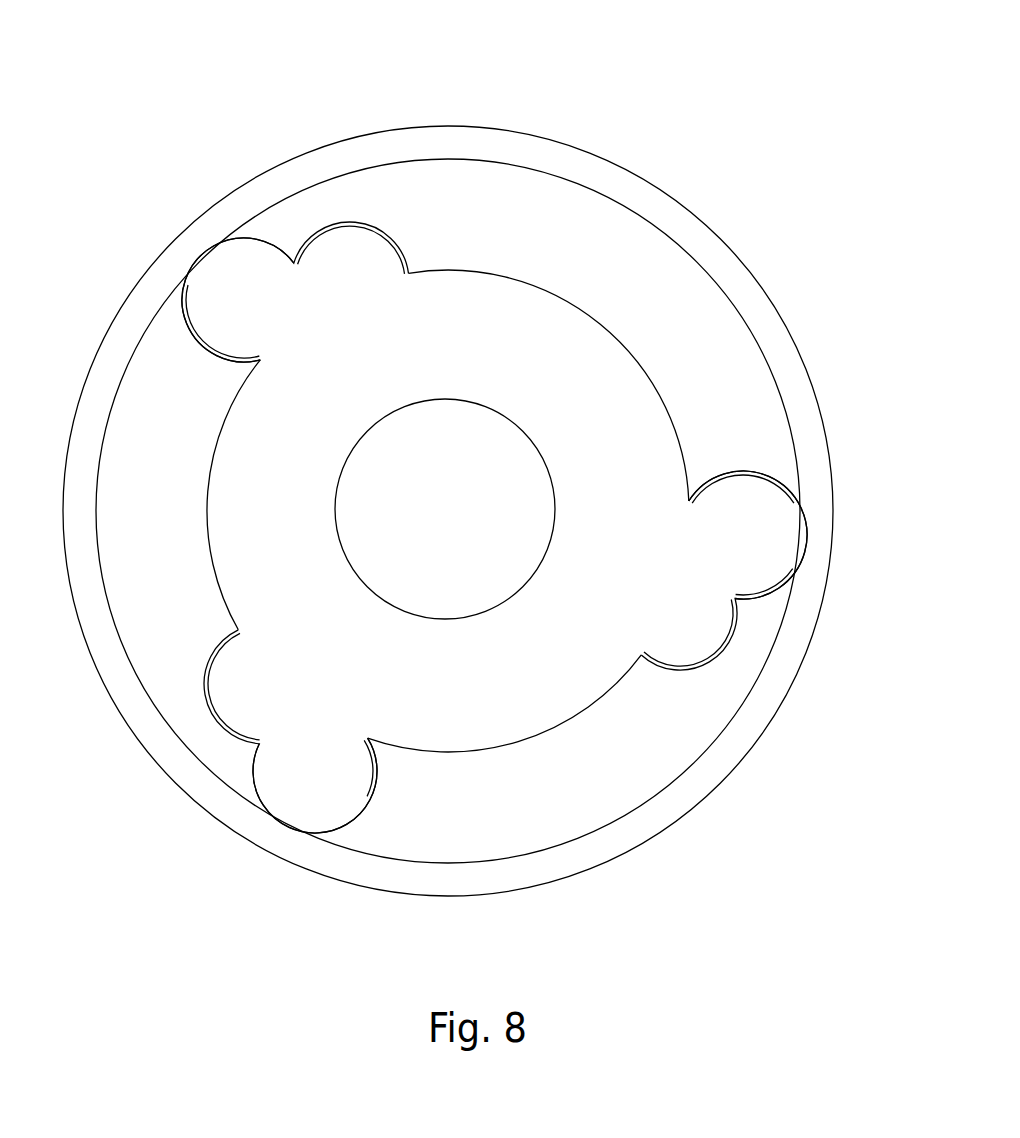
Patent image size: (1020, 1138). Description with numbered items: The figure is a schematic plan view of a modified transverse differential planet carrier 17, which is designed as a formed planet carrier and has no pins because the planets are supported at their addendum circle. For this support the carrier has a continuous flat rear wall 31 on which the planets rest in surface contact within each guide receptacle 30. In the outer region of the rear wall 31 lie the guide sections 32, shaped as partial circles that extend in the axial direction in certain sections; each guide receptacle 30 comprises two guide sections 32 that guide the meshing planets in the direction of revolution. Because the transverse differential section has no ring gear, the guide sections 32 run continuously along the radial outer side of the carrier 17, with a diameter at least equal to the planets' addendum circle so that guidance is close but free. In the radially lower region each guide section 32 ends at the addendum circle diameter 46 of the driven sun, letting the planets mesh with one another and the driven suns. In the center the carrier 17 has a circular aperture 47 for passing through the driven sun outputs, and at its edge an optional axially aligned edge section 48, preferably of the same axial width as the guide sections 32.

The transverse differential planet carrier 17 is at (690, 95).
The guide receptacle 30 is at (215, 295).
The continuous flat rear wall 31 is at (286, 308).
The guide section 32 is at (257, 235).
The addendum circle diameter of driven sun 46 is at (640, 350).
The circular aperture 47 is at (450, 480).
The edge section 48 is at (178, 237).